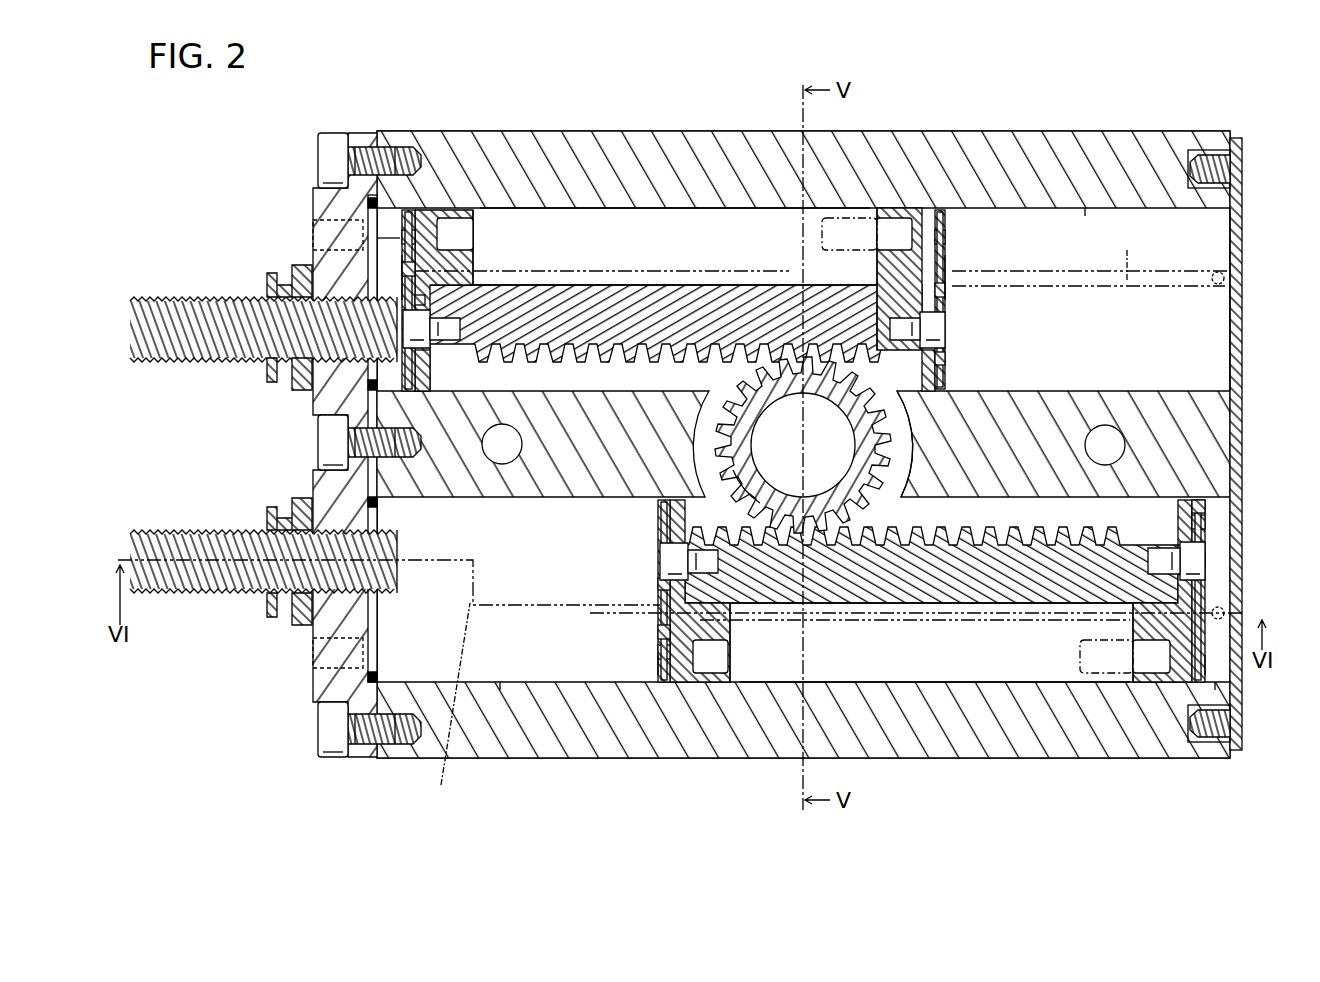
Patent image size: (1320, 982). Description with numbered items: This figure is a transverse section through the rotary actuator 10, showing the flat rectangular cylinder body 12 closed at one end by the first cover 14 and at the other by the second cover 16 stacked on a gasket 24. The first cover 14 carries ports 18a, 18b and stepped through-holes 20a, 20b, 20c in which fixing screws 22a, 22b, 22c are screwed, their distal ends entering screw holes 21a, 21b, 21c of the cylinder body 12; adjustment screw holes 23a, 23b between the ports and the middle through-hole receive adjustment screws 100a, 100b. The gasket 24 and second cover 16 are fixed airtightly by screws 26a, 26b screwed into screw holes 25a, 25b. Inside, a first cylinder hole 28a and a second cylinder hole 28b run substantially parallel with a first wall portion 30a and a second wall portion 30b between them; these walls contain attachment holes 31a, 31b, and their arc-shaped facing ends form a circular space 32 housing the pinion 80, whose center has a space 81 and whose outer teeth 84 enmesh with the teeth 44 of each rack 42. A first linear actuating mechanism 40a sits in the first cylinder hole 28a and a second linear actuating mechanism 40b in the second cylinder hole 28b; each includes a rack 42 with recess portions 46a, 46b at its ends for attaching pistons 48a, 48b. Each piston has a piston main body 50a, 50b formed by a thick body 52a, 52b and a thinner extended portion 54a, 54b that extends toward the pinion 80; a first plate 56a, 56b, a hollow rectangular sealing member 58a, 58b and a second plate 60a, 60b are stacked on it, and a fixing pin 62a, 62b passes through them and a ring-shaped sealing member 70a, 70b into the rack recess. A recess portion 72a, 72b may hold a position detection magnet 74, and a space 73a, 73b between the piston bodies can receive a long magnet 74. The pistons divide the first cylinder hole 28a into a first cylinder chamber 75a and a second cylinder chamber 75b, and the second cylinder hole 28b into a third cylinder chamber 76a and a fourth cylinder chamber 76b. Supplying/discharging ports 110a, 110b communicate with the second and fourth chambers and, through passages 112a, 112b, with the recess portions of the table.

The rotary actuator 10 is at (200, 111).
The cylinder body 12 is at (548, 130).
The first cover 14 is at (330, 405).
The second cover 16 is at (1242, 250).
The port 18a is at (312, 235).
The port 18b is at (312, 663).
The through-hole 20a is at (370, 160).
The through-hole 20b is at (370, 442).
The through-hole 20c is at (370, 729).
The screw hole 21a is at (385, 150).
The screw hole 21b is at (400, 460).
The screw hole 21c is at (395, 746).
The fixing screw 22a is at (318, 152).
The fixing screw 22b is at (318, 462).
The fixing screw 22c is at (318, 750).
The adjustment screw hole 23a is at (262, 370).
The adjustment screw hole 23b is at (330, 540).
The gasket 24 is at (1228, 238).
The screw hole 25a is at (1210, 150).
The screw hole 25b is at (1212, 745).
The screw 26a is at (1242, 168).
The screw 26b is at (1242, 724).
The first cylinder hole 28a is at (822, 297).
The second cylinder hole 28b is at (681, 590).
The first wall portion 30a is at (548, 498).
The second wall portion 30b is at (1063, 390).
The attachment hole 31a is at (500, 463).
The attachment hole 31b is at (1107, 425).
The space 32 is at (898, 470).
The first linear actuating mechanism 40a is at (640, 276).
The second linear actuating mechanism 40b is at (930, 605).
The rack 42 is at (590, 300).
The teeth 44 is at (590, 346).
The recess portion 46a is at (410, 300).
The recess portion 46b is at (944, 318).
The piston 48a is at (390, 281).
The piston 48b is at (957, 267).
The piston main body 50a is at (488, 262).
The piston main body 50b is at (866, 268).
The body 52a is at (450, 262).
The body 52b is at (922, 210).
The extended portion 54a is at (432, 372).
The extended portion 54b is at (936, 372).
The first plate 56a is at (400, 237).
The first plate 56b is at (946, 237).
The sealing member 58a is at (408, 214).
The sealing member 58b is at (940, 214).
The second plate 60a is at (400, 268).
The second plate 60b is at (946, 290).
The fixing pin 62a is at (402, 328).
The fixing pin 62b is at (946, 325).
The sealing member 70a is at (420, 295).
The sealing member 70b is at (946, 360).
The recess portion 72a is at (475, 232).
The recess portion 72b is at (875, 235).
The space 73a is at (700, 232).
The space 73b is at (965, 686).
The position detection magnet 74 is at (892, 216).
The first cylinder chamber 75a is at (392, 243).
The second cylinder chamber 75b is at (1090, 228).
The third cylinder chamber 76a is at (505, 650).
The fourth cylinder chamber 76b is at (1216, 686).
The pinion 80 is at (752, 392).
The space 81 is at (803, 445).
The teeth 84 is at (740, 518).
The adjustment screw 100a is at (160, 296).
The adjustment screw 100b is at (160, 529).
The supplying/discharging port 110a is at (1216, 286).
The supplying/discharging port 110b is at (1222, 620).
The passage 112a is at (1142, 252).
The passage 112b is at (444, 708).